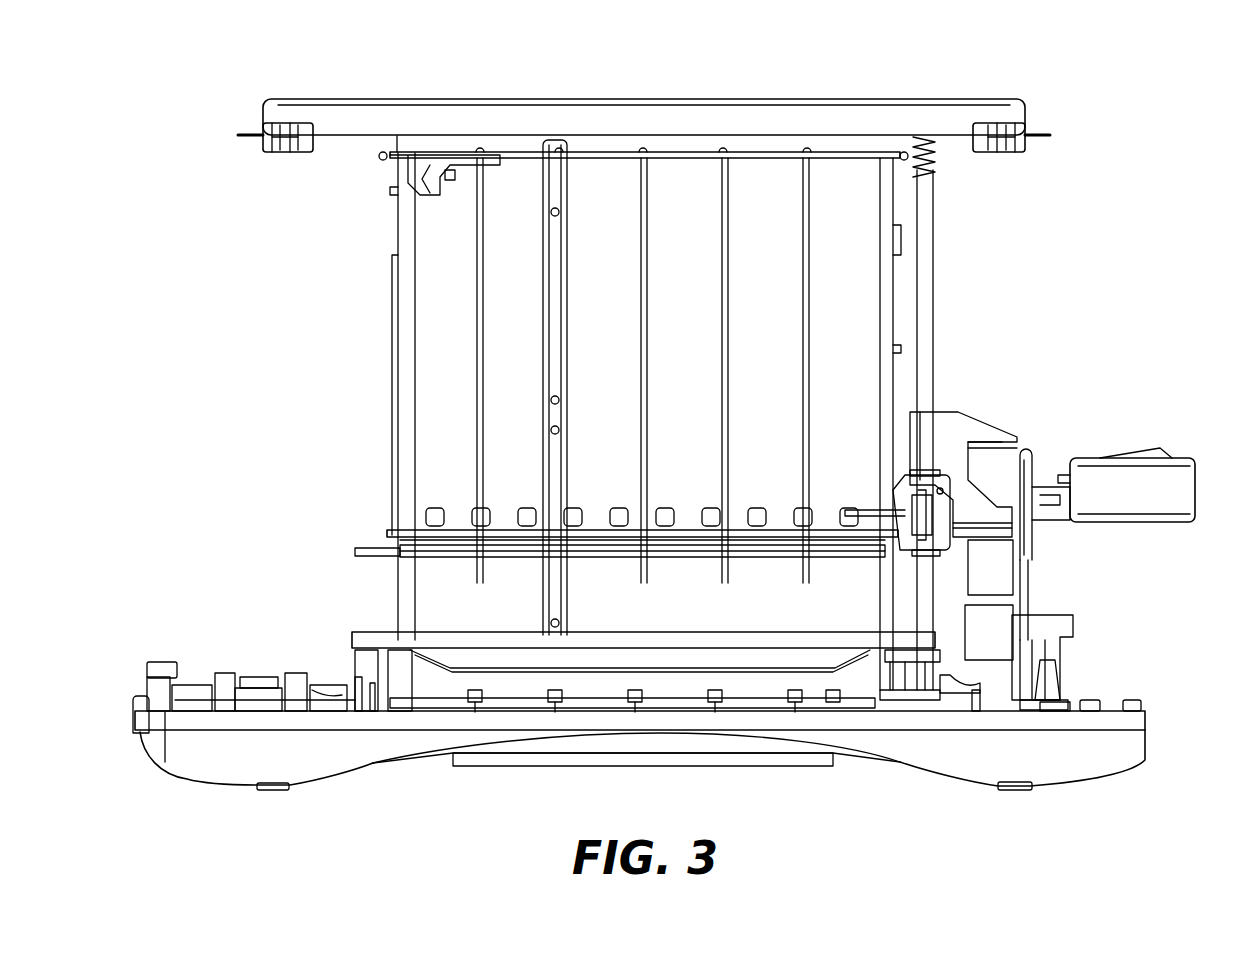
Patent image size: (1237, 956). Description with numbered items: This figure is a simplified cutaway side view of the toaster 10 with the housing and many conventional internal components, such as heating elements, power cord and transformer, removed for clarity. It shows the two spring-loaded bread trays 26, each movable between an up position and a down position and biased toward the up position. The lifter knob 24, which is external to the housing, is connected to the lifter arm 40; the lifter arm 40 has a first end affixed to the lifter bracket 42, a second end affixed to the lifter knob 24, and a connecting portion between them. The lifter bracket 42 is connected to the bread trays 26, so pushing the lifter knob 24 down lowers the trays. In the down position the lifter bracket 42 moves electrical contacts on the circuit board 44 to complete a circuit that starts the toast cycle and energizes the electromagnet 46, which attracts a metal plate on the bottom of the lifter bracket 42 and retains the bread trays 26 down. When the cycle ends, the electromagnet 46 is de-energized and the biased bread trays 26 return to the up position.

The toaster 10 is at (1057, 79).
The bread tray 26 is at (676, 164).
The lifter bracket 42 is at (957, 411).
The lifter arm 40 is at (1030, 470).
The lifter knob 24 is at (1186, 488).
The electromagnet 46 is at (1005, 548).
The circuit board 44 is at (1025, 600).